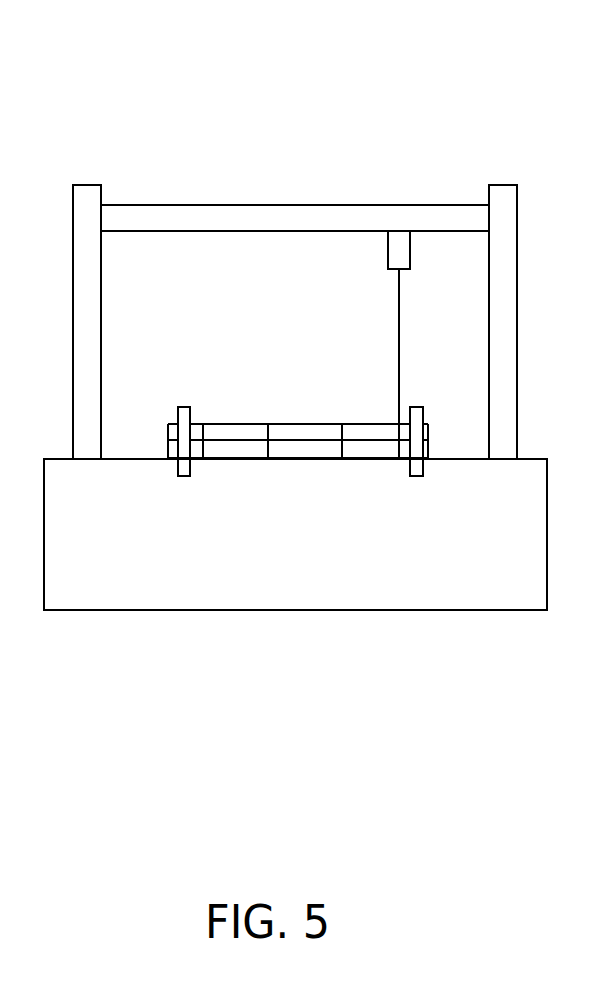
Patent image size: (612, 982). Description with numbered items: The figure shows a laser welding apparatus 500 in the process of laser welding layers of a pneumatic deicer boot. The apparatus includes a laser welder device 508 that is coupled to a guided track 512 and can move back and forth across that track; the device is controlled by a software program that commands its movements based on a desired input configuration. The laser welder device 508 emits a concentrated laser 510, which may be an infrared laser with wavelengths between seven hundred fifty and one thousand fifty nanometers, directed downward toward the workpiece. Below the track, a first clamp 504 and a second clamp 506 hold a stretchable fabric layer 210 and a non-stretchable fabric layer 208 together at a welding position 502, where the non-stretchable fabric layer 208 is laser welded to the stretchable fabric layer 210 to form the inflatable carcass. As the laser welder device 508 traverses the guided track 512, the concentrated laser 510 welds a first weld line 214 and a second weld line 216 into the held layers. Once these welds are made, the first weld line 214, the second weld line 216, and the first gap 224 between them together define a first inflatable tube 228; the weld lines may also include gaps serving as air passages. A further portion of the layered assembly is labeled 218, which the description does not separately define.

The laser welding apparatus 500 is at (340, 122).
The guided track 512 is at (290, 205).
The laser welder device 508 is at (388, 253).
The concentrated laser 510 is at (399, 300).
The welding position 502 is at (286, 467).
The first clamp 504 is at (178, 478).
The second clamp 506 is at (419, 478).
The stretchable fabric layer 210 is at (226, 427).
The non-stretchable fabric layer 208 is at (228, 455).
The shaft segment 218 is at (268, 426).
The second weld line 216 is at (338, 424).
The first inflatable tube 228 is at (375, 432).
The first gap 224 is at (360, 441).
The first weld line 214 is at (401, 418).